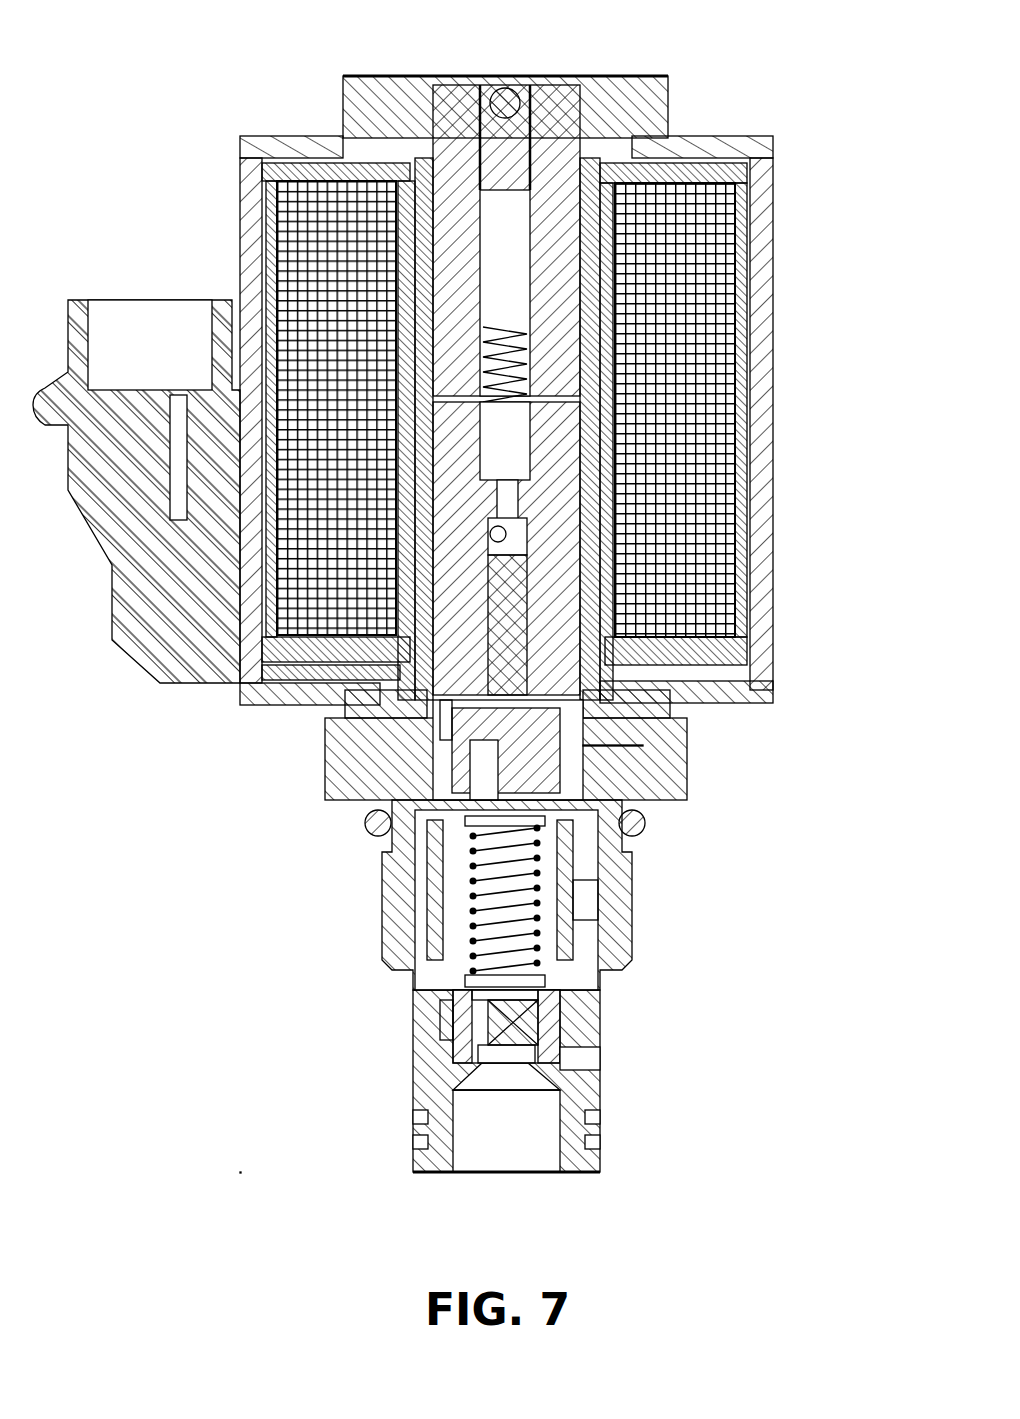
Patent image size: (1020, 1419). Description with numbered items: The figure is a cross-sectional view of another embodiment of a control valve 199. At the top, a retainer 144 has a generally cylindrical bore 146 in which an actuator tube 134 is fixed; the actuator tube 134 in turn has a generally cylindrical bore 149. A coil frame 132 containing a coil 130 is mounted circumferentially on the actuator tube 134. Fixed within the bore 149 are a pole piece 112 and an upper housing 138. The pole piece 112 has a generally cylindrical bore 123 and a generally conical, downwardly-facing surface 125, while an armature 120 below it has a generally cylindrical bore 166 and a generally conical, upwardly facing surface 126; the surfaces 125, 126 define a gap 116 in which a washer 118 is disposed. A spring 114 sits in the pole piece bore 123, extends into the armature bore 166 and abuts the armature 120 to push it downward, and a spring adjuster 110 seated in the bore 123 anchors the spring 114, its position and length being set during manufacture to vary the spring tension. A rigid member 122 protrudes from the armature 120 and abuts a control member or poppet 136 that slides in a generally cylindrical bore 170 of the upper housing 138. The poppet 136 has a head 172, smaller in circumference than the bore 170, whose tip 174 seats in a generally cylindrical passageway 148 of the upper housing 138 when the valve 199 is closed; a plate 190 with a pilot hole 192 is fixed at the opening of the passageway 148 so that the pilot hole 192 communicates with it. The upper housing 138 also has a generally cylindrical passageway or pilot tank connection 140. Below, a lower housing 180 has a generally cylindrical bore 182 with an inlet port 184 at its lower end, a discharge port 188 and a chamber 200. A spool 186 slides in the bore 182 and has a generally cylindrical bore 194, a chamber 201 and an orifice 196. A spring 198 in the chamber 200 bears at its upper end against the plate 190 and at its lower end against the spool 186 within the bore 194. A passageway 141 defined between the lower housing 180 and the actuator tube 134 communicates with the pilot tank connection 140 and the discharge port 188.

The spring adjuster 110 is at (755, 240).
The pole piece 112 is at (545, 77).
The spring 114 is at (600, 445).
The gap 116 is at (470, 397).
The washer 118 is at (470, 380).
The armature 120 is at (650, 525).
The rigid member 122 is at (760, 588).
The bore 123 is at (525, 77).
The downwardly-facing surface 125 is at (700, 352).
The upwardly facing surface 126 is at (635, 398).
The coil 130 is at (770, 150).
The coil frame 132 is at (762, 200).
The actuator tube 134 is at (687, 732).
The control member or poppet 136 is at (773, 673).
The upper housing 138 is at (480, 780).
The pilot tank connection 140 is at (687, 780).
The passageway 141 is at (633, 900).
The retainer 144 is at (613, 77).
The bore 146 is at (467, 77).
The passageway 148 is at (470, 855).
The bore 149 is at (687, 750).
The bore 166 is at (530, 455).
The bore 170 is at (445, 710).
The head 172 is at (465, 812).
The tip 174 is at (677, 808).
The lower housing 180 is at (425, 1020).
The bore 182 is at (470, 1175).
The inlet port 184 is at (511, 1173).
The spool 186 is at (430, 1030).
The discharge port 188 is at (600, 1058).
The plate 190 is at (633, 838).
The pilot hole 192 is at (633, 873).
The bore 194 is at (472, 980).
The orifice 196 is at (590, 1040).
The spring 198 is at (627, 973).
The control valve 199 is at (178, 740).
The chamber 200 is at (633, 933).
The chamber 201 is at (445, 988).